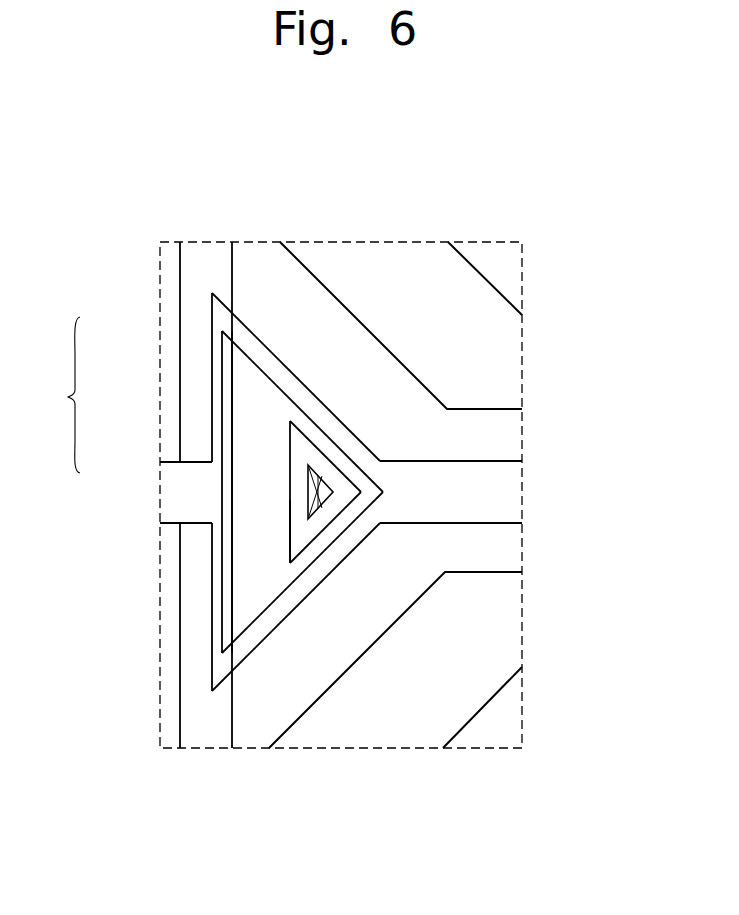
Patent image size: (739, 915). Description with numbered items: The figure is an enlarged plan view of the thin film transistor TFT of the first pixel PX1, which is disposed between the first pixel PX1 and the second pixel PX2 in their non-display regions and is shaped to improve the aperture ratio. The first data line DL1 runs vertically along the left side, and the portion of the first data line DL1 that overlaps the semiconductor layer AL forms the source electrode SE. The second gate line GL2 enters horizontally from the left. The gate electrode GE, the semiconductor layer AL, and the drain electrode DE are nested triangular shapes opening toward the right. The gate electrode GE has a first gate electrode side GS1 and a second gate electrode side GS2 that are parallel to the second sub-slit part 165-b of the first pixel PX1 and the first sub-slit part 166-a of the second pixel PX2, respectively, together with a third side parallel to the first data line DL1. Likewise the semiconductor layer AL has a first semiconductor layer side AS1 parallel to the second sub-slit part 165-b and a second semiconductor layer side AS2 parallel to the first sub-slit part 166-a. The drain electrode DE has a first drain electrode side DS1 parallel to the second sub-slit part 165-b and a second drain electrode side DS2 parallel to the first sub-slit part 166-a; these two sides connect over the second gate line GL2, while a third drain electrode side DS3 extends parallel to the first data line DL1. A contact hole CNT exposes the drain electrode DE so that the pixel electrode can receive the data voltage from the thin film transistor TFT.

The first data line DL1 is at (206, 258).
The second sub-slit part 165-b is at (394, 258).
The first sub-slit part 166-a is at (397, 732).
The second gate line GL2 is at (167, 492).
The gate electrode GE is at (212, 358).
The first gate electrode side GS1 is at (263, 341).
The second gate electrode side GS2 is at (223, 682).
The first pixel PX1 is at (511, 424).
The second pixel PX2 is at (510, 562).
The semiconductor layer AL is at (222, 390).
The first semiconductor layer side AS1 is at (283, 392).
The second semiconductor layer side AS2 is at (295, 578).
The source electrode SE is at (227, 348).
The drain electrode DE is at (290, 447).
The first drain electrode side DS1 is at (323, 455).
The second drain electrode side DS2 is at (328, 528).
The third drain electrode side DS3 is at (290, 530).
The contact hole CNT is at (308, 493).
The thin film transistor TFT is at (48, 395).